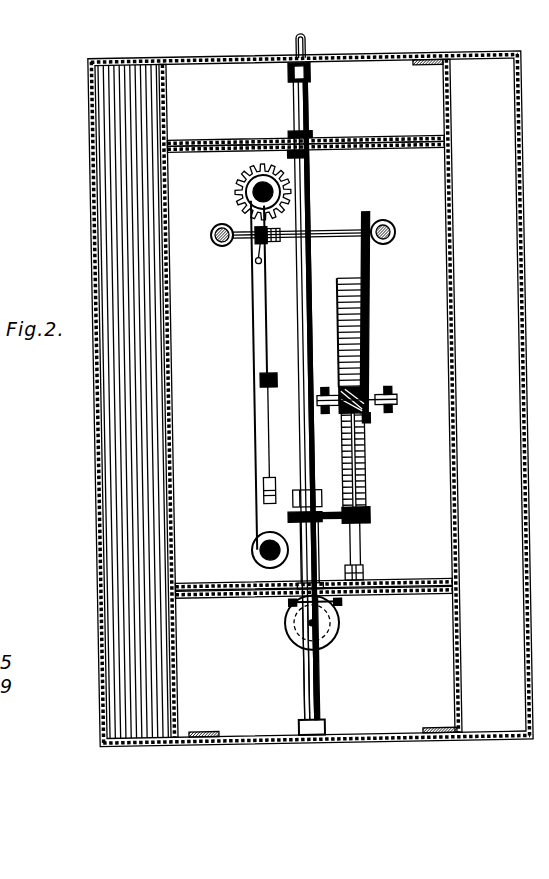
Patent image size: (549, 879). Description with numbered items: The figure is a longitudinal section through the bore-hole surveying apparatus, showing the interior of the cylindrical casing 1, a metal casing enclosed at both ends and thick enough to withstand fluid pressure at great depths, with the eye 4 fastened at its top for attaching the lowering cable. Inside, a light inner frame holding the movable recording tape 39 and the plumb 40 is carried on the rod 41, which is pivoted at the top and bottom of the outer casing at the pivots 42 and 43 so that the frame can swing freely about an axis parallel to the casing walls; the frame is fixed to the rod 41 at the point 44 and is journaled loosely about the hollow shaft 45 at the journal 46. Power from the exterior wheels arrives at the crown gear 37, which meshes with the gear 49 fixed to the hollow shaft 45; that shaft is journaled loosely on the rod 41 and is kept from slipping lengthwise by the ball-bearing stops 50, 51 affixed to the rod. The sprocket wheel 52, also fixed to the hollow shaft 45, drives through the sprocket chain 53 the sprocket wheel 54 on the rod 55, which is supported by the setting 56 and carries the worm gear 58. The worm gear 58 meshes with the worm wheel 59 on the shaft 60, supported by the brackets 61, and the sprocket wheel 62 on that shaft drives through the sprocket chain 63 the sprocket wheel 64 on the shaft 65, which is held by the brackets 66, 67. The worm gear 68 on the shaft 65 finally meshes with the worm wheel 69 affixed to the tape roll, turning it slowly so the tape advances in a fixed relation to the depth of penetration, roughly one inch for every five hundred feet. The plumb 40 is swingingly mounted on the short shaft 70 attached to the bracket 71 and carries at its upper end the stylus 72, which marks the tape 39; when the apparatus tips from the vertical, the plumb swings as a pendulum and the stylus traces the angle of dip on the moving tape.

The cylindrical casing 1 is at (518, 655).
The eye 4 is at (312, 45).
The crown gear 37 is at (285, 628).
The recording tape 39 is at (255, 541).
The plumb 40 is at (268, 476).
The rod 41 is at (313, 195).
The pivot 42 is at (294, 70).
The pivot 43 is at (320, 731).
The fixing point 44 is at (320, 151).
The hollow shaft 45 is at (317, 576).
The journal 46 is at (294, 581).
The gear 49 is at (338, 603).
The stop 50 is at (330, 627).
The stop 51 is at (294, 490).
The sprocket wheel 52 is at (286, 517).
The sprocket chain 53 is at (326, 520).
The sprocket wheel 54 is at (368, 515).
The rod 55 is at (360, 549).
The setting 56 is at (361, 580).
The worm gear 58 is at (372, 390).
The worm wheel 59 is at (340, 350).
The shaft 60 is at (398, 401).
The brackets 61 is at (392, 391).
The sprocket wheel 62 is at (368, 424).
The sprocket chain 63 is at (366, 281).
The sprocket wheel 64 is at (369, 216).
The shaft 65 is at (333, 229).
The bracket 66 is at (398, 229).
The bracket 67 is at (214, 234).
The worm gear 68 is at (268, 244).
The worm wheel 69 is at (243, 190).
The short shaft 70 is at (271, 374).
The bracket 71 is at (270, 390).
The stylus 72 is at (264, 262).